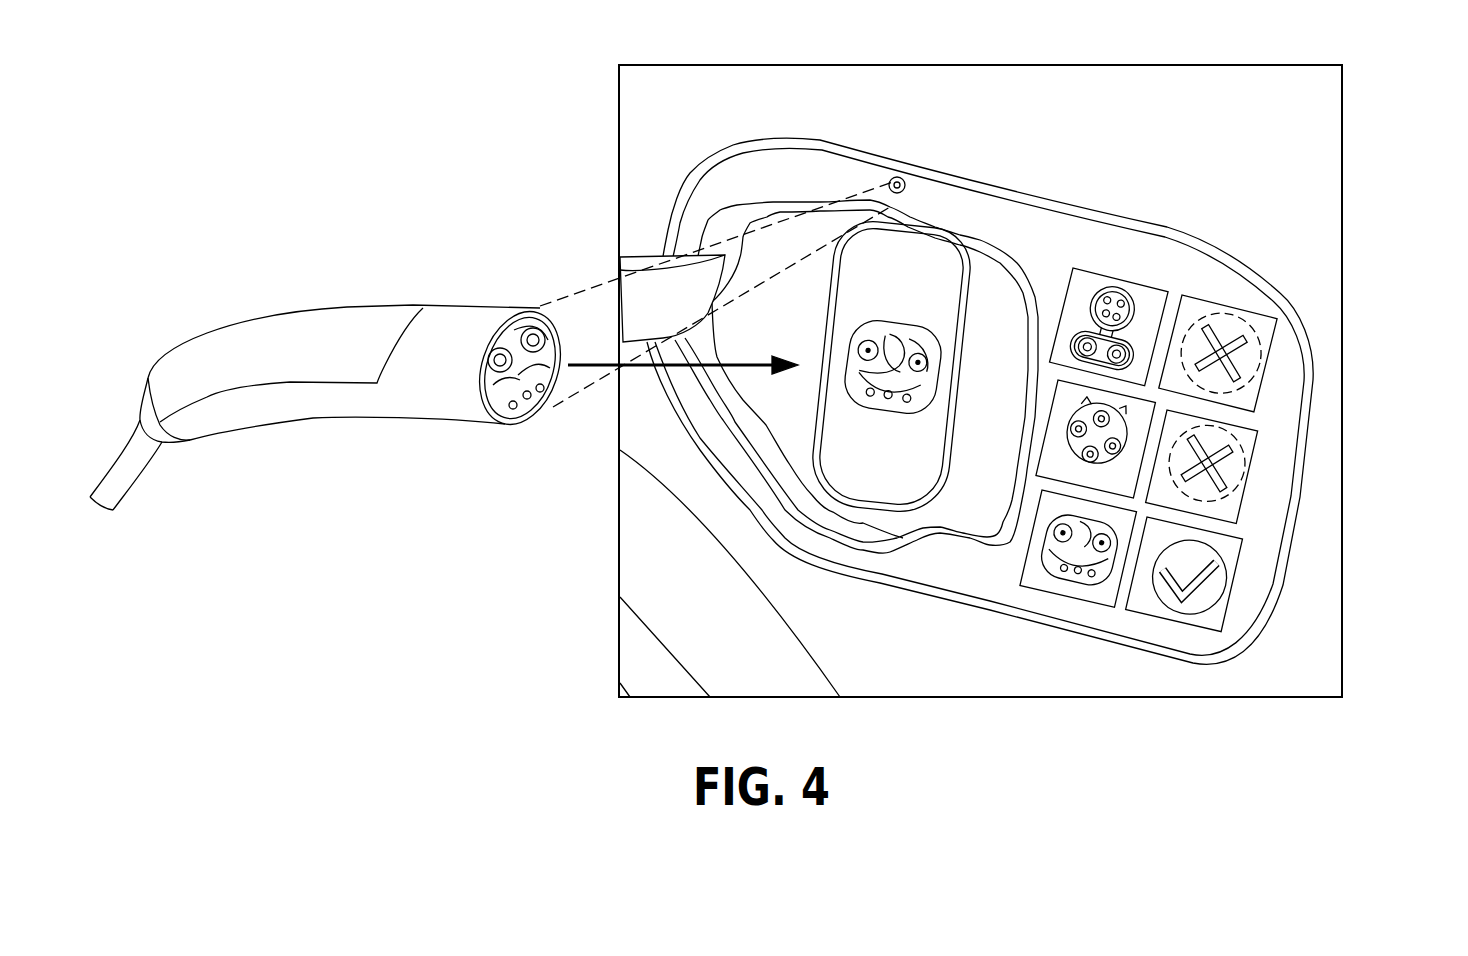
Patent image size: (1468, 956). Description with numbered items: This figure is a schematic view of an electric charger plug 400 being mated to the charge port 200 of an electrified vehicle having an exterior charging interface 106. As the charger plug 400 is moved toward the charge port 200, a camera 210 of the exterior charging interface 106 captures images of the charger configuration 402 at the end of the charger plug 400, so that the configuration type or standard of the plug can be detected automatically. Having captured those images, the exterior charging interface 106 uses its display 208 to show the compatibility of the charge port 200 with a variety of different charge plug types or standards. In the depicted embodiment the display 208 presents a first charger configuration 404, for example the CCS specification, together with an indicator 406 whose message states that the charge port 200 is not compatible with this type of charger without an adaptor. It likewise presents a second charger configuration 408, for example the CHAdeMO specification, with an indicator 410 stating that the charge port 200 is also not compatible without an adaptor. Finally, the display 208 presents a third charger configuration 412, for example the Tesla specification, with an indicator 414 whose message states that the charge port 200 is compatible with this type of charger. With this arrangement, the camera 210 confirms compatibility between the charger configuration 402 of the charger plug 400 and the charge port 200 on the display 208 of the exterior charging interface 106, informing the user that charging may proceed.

The exterior charging interface 106 is at (1036, 172).
The charge port 200 is at (903, 300).
The display 208 is at (1157, 627).
The camera 210 is at (900, 176).
The electric charger plug 400 is at (342, 306).
The charger configuration 402 is at (523, 422).
The first charger configuration 404 is at (1130, 285).
The indicator 406 is at (1235, 305).
The second charger configuration 408 is at (1053, 420).
The indicator 410 is at (1253, 482).
The third charger configuration 412 is at (1077, 600).
The indicator 414 is at (1240, 590).